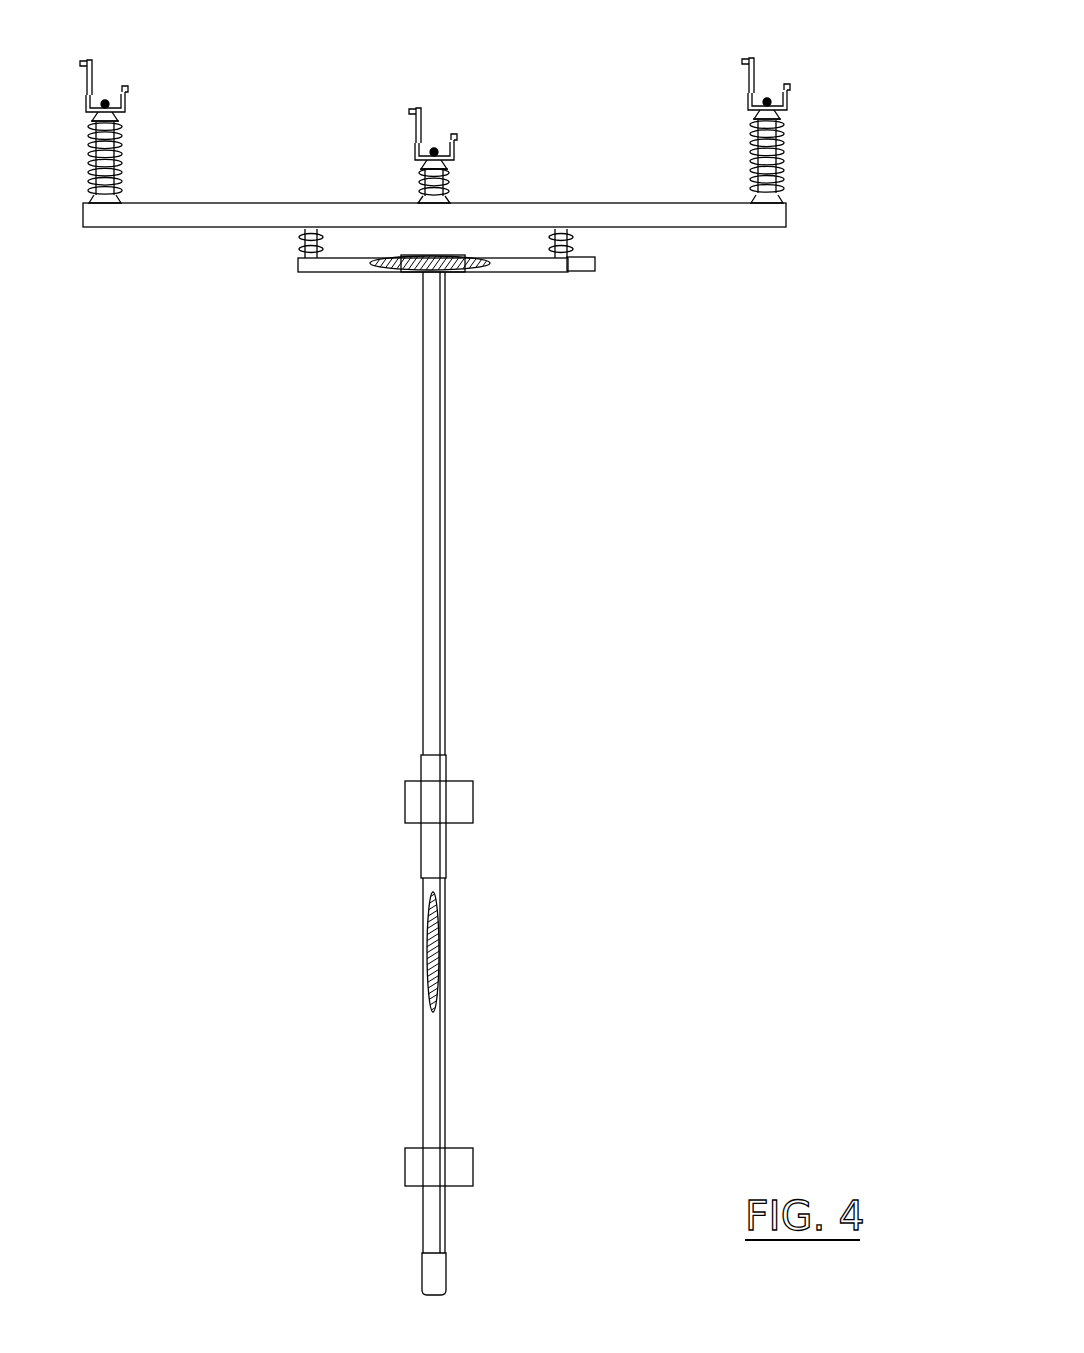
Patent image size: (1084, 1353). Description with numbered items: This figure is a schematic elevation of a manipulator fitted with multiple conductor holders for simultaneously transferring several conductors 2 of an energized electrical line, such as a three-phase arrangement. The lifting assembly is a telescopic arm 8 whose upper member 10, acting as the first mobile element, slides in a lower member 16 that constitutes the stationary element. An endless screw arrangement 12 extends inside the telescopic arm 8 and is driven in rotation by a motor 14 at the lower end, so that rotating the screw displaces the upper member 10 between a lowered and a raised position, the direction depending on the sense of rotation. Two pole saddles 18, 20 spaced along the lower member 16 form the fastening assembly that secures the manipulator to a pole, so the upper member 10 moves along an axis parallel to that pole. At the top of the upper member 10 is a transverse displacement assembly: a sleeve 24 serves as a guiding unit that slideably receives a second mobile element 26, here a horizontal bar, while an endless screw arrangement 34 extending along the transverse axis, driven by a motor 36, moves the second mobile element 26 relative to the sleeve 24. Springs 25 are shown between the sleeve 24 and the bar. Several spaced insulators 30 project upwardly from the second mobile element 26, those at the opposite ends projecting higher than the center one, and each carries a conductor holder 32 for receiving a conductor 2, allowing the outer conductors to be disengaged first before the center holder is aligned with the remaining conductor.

The conductor 2 is at (105, 99).
The telescopic arm 8 is at (390, 619).
The upper member 10 is at (427, 473).
The endless screw arrangement 12 is at (442, 962).
The motor 14 is at (430, 1272).
The lower member 16 is at (427, 1085).
The pole saddle 18 is at (410, 1163).
The pole saddle 20 is at (410, 790).
The sleeve 24 is at (400, 272).
The spring 25 is at (300, 243).
The second mobile element 26 is at (160, 226).
The insulator 30 is at (122, 172).
The conductor holder 32 is at (148, 97).
The endless screw arrangement 34 is at (478, 272).
The motor 36 is at (583, 271).